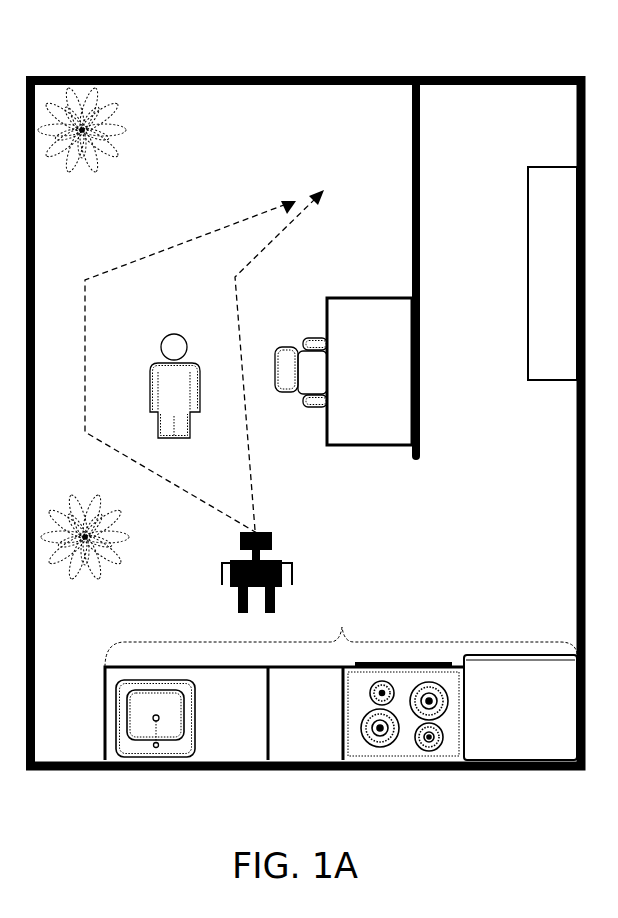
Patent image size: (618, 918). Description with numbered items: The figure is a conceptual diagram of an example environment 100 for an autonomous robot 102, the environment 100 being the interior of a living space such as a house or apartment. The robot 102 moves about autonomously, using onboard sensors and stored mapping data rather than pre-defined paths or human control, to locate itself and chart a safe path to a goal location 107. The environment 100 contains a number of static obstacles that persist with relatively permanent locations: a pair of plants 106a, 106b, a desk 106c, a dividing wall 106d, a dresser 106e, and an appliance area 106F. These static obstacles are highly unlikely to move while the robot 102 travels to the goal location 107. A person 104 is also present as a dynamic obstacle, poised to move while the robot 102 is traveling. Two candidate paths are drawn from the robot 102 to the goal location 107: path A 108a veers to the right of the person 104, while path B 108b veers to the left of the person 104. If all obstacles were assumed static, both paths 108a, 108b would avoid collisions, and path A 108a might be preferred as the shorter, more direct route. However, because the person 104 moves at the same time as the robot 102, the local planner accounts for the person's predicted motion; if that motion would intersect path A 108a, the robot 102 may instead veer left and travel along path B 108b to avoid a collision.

The environment 100 is at (104, 57).
The autonomous robot 102 is at (216, 576).
The person 104 is at (152, 381).
The plant 106a is at (130, 134).
The plant 106b is at (67, 585).
The desk 106c is at (340, 446).
The dividing wall 106d is at (421, 242).
The dresser 106e is at (528, 283).
The appliance area 106F is at (341, 676).
The goal location 107 is at (340, 140).
The path A 108a is at (236, 302).
The path B 108b is at (150, 258).